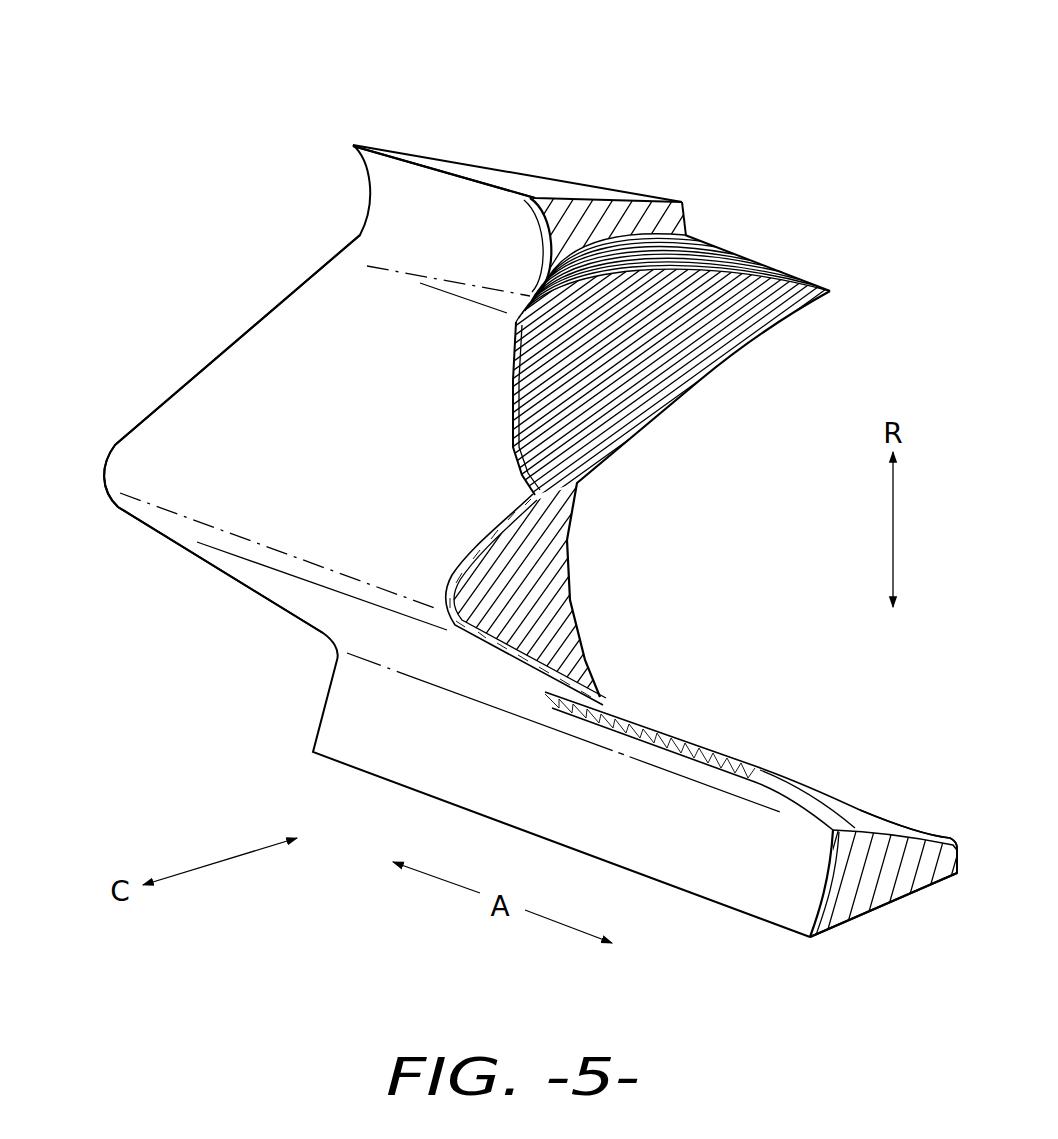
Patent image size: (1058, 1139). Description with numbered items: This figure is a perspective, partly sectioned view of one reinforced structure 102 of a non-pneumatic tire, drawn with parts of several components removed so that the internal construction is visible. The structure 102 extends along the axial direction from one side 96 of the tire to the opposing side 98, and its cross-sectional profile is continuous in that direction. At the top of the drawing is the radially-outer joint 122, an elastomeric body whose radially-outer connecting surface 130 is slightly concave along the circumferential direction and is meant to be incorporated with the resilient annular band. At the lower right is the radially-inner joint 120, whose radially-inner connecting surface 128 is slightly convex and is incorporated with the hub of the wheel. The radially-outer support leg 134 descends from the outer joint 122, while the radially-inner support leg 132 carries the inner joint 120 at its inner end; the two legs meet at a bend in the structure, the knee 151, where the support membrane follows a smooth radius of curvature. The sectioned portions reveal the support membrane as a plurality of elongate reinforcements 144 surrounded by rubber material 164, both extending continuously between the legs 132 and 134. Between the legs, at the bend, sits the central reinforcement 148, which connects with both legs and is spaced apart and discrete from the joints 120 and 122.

The reinforced structure 102 is at (276, 96).
The radially-outer connecting surface 130 is at (478, 150).
The radially-outer joint 122 is at (613, 217).
The reinforcements 144 is at (730, 252).
The radially-outer support leg 134 is at (333, 295).
The side 96 is at (175, 333).
The knee 151 is at (103, 470).
The opposing side 98 is at (682, 451).
The central reinforcement 148 is at (540, 592).
The rubber material 164 is at (730, 752).
The radially-inner support leg 132 is at (847, 810).
The radially-inner joint 120 is at (893, 882).
The radially-inner connecting surface 128 is at (865, 918).